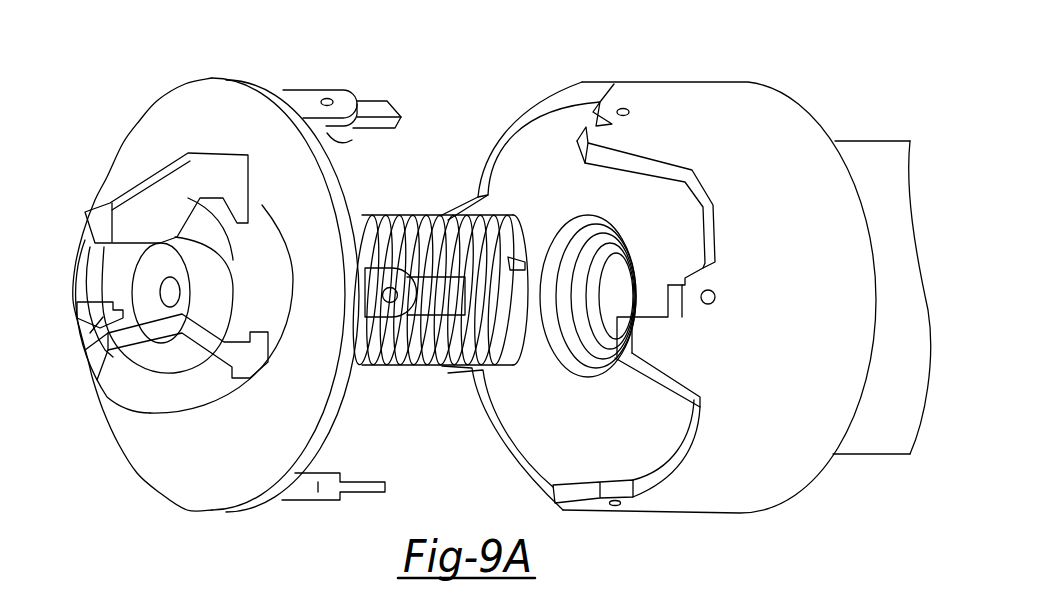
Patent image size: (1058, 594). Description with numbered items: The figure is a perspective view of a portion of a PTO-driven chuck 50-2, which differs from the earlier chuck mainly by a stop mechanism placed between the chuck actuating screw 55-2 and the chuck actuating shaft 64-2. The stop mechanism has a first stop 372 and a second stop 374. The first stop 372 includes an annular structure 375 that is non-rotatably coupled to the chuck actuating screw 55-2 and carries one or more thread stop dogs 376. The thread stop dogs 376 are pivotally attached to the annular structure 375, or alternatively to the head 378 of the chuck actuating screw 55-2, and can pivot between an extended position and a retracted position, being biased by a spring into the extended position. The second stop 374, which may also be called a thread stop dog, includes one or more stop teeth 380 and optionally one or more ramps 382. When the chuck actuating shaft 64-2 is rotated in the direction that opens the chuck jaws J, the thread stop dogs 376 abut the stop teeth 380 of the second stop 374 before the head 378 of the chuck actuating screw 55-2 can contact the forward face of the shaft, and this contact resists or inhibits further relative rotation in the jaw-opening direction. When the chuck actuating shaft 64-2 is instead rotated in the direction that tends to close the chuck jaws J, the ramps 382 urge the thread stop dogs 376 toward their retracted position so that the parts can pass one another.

The first stop 372 is at (252, 58).
The annular structure 375 is at (147, 462).
The head 378 is at (203, 405).
The chuck jaws J is at (153, 197).
The chuck actuating screw 55-2 is at (260, 220).
The thread stop dogs 376 is at (450, 297).
The PTO-driven chuck 50-2 is at (678, 54).
The second stop 374 is at (645, 438).
The chuck actuating shaft 64-2 is at (878, 148).
The ramps 382 is at (635, 167).
The stop teeth 380 is at (645, 339).